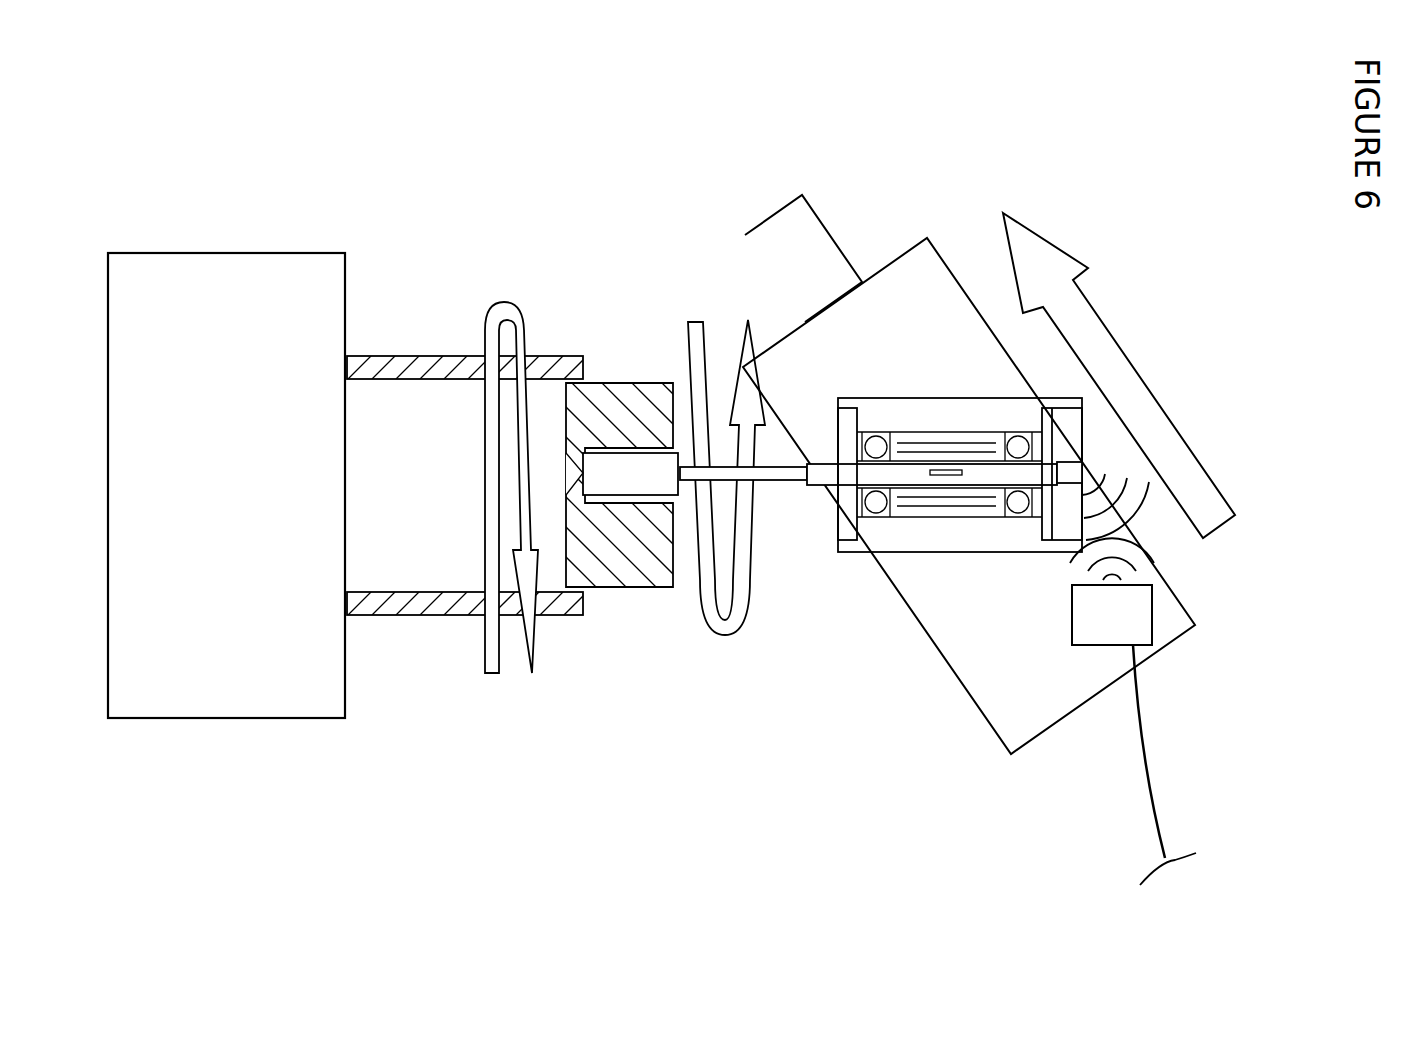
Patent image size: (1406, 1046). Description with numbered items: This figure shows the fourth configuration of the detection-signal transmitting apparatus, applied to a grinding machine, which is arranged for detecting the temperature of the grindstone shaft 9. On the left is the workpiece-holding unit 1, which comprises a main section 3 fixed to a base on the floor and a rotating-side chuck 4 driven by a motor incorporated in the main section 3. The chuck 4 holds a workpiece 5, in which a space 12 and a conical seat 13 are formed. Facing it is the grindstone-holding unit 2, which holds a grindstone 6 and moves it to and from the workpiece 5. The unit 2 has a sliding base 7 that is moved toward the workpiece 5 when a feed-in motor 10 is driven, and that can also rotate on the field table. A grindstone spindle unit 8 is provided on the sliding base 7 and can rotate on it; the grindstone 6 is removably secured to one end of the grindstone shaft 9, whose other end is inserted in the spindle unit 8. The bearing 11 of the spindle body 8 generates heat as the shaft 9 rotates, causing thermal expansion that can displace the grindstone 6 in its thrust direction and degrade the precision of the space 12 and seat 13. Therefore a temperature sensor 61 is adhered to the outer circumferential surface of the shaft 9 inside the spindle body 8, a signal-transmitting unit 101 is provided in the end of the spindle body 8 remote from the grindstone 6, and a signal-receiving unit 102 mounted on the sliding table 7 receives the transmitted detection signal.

The workpiece-holding unit 1 is at (420, 163).
The grindstone-holding unit 2 is at (862, 210).
The main section 3 is at (312, 277).
The rotating-side chuck 4 is at (400, 350).
The workpiece 5 is at (633, 575).
The grindstone 6 is at (657, 478).
The sliding base 7 is at (950, 630).
The grindstone spindle unit 8 is at (868, 533).
The grindstone shaft 9 is at (818, 478).
The feed-in motor 10 is at (780, 236).
The bearing 11 is at (865, 433).
The space 12 is at (613, 508).
The conical seat 13 is at (576, 488).
The temperature sensor 61 is at (937, 480).
The signal-transmitting unit 101 is at (1072, 467).
The signal-receiving unit 102 is at (1138, 633).